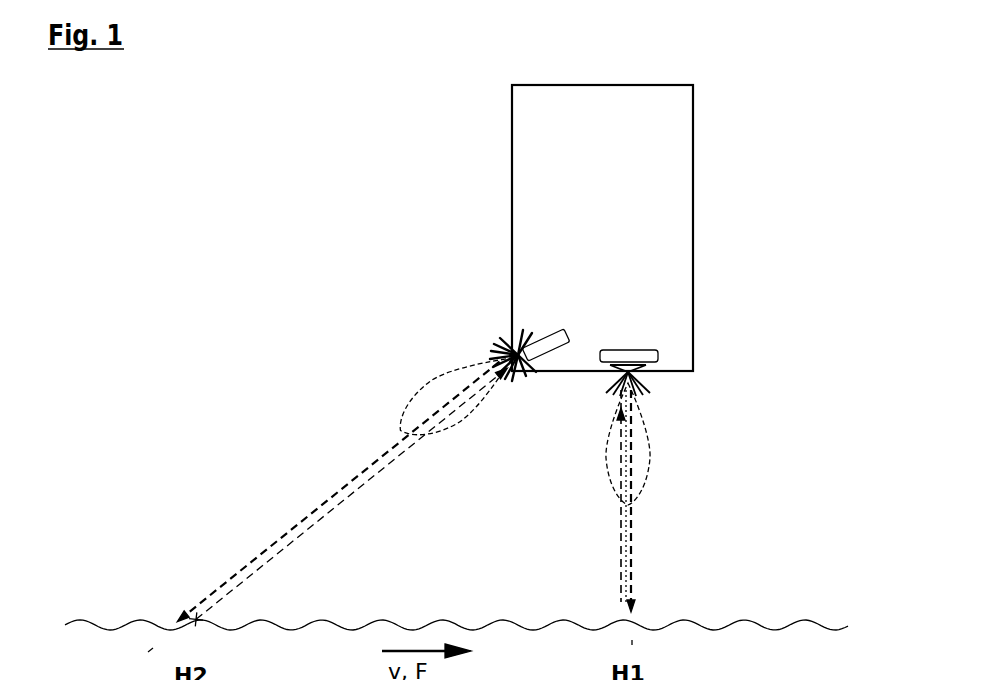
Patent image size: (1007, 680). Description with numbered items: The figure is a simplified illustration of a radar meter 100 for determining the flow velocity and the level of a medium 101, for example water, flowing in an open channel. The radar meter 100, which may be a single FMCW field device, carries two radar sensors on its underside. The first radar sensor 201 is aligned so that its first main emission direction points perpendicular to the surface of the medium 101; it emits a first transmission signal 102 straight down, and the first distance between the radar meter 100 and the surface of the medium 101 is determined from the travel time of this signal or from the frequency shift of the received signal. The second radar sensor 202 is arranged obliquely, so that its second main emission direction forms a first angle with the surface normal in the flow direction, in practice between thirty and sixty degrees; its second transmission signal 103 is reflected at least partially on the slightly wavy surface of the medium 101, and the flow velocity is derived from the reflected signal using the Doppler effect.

The radar meter 100 is at (750, 65).
The medium 101 is at (456, 574).
The first transmission signal 102 is at (625, 556).
The second transmission signal 103 is at (243, 568).
The first radar sensor 201 is at (657, 383).
The second radar sensor 202 is at (548, 338).